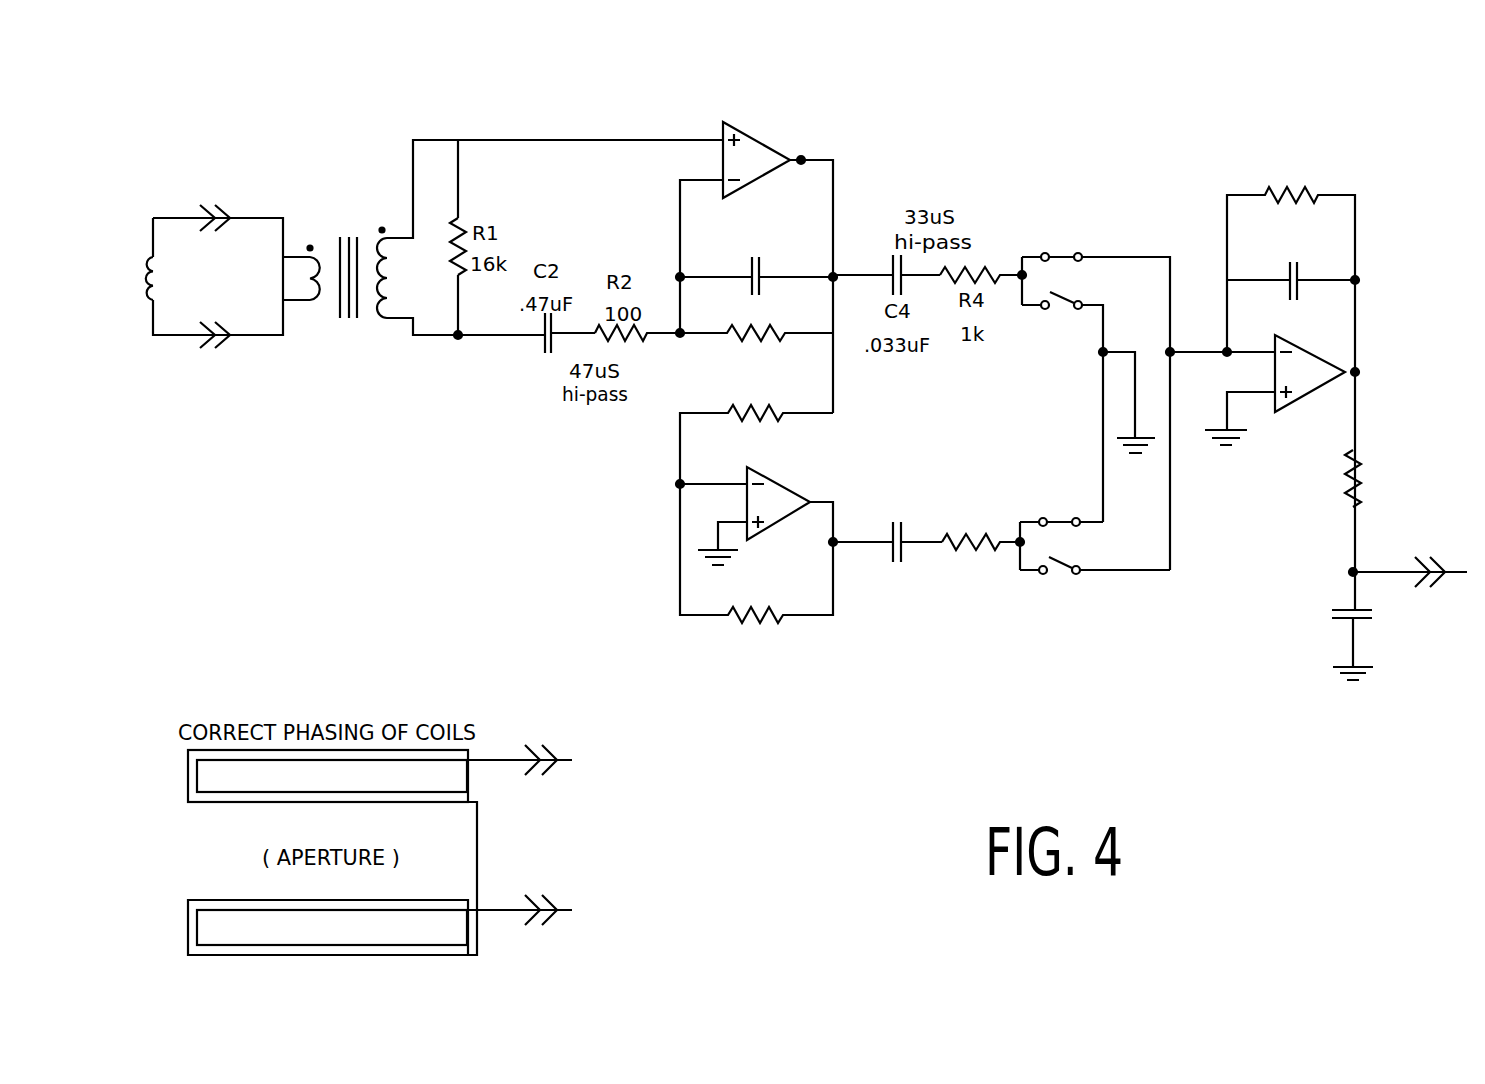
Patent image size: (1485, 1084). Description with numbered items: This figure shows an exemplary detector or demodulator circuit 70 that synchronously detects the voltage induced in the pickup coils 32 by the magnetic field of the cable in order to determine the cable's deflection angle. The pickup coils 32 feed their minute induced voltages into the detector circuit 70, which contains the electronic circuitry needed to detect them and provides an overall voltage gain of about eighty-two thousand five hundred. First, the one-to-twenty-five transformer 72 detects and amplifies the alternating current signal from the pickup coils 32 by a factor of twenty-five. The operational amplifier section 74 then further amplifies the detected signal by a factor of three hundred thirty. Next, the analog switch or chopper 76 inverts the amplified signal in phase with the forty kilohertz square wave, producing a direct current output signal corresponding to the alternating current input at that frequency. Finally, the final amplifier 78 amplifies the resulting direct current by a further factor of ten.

The pickup coils 32 is at (226, 289).
The 1:25 transformer 72 is at (516, 251).
The operational amplifier section 74 is at (757, 253).
The detector or demodulator circuit 70 is at (724, 690).
The analog switch or chopper 76 is at (1123, 442).
The final amplifier 78 is at (1338, 417).